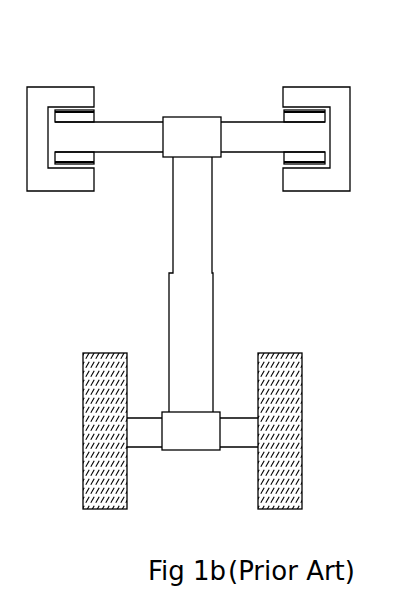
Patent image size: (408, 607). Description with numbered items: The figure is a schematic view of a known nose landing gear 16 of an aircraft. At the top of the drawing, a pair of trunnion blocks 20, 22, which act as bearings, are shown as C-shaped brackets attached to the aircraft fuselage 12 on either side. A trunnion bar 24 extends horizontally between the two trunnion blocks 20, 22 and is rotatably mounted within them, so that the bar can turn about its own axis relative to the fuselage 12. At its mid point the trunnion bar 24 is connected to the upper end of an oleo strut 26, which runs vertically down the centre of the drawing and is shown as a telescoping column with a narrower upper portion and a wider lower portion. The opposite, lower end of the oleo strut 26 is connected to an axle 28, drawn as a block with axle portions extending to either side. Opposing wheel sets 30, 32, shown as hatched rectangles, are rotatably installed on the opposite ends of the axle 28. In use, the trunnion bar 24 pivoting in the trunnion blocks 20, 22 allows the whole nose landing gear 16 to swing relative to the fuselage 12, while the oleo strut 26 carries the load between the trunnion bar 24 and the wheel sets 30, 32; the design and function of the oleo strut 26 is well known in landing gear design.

The aircraft fuselage 12 is at (62, 180).
The nose landing gear 16 is at (198, 71).
The trunnion block 20 is at (72, 116).
The trunnion block 22 is at (304, 115).
The trunnion bar 24 is at (138, 140).
The oleo strut 26 is at (212, 304).
The axle 28 is at (238, 437).
The wheel set 30 is at (98, 407).
The wheel set 32 is at (291, 403).